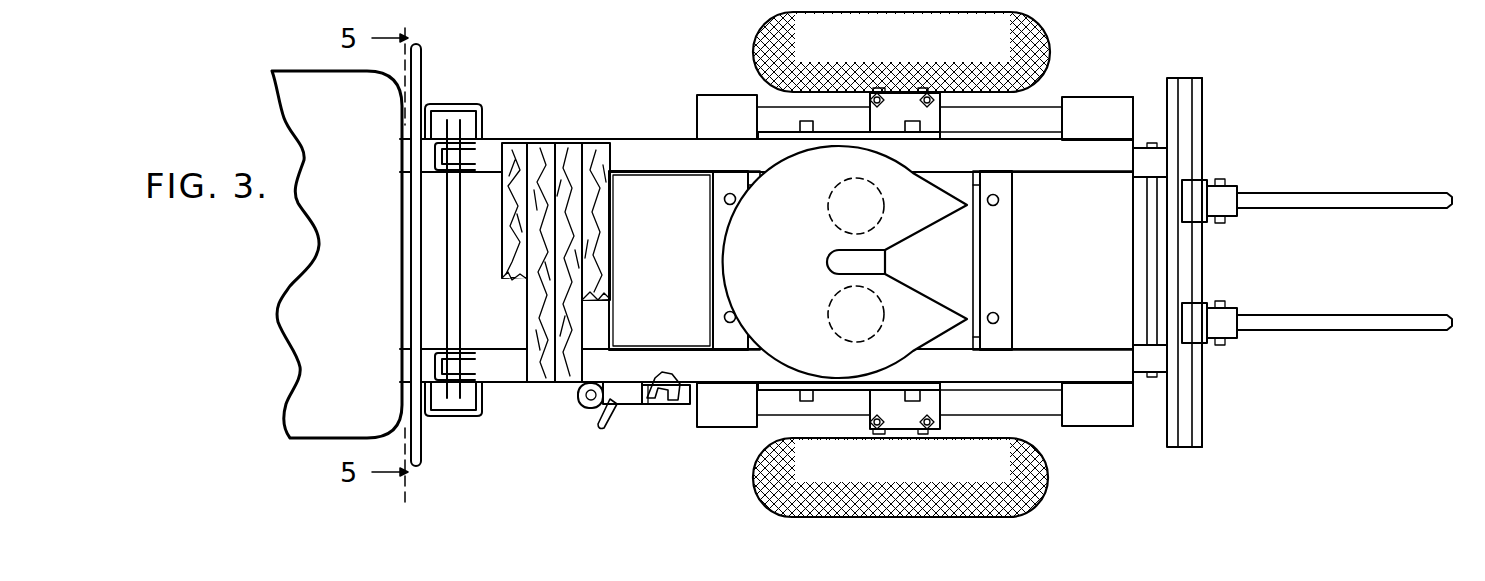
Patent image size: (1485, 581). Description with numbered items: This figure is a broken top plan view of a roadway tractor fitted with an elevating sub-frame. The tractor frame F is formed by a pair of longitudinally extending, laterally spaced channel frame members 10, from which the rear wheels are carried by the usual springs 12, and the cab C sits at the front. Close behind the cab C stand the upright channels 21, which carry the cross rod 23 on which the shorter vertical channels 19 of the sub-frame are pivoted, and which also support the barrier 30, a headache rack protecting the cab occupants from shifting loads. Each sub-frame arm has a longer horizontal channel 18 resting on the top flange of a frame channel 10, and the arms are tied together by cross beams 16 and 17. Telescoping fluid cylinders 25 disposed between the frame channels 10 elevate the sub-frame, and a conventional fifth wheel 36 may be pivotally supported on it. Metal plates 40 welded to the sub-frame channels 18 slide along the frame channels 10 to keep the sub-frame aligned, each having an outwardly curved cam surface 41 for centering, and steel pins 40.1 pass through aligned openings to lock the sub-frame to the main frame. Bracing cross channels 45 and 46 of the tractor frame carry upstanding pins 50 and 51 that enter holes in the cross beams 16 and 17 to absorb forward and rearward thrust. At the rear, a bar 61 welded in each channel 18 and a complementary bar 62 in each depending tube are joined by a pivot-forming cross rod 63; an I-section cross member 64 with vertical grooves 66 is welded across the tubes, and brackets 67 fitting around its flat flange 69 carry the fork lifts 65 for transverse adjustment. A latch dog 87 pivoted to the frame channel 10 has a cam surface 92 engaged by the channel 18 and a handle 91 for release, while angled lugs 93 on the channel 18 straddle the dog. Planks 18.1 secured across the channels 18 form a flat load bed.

The frame member 10 is at (766, 265).
The spring 12 is at (1040, 113).
The cross beam 16 is at (718, 245).
The cross beam 17 is at (1000, 248).
The horizontal channel 18 is at (628, 153).
The planks 18.1 is at (590, 143).
The vertical channel 19 is at (468, 166).
The upright channel 21 is at (480, 102).
The cross rod 23 is at (459, 290).
The fluid cylinder 25 is at (826, 205).
The barrier 30 is at (427, 75).
The fifth wheel 36 is at (747, 218).
The metal plate 40 is at (845, 261).
The steel pin 40.1 is at (808, 120).
The cam surface 41 is at (780, 128).
The bracing cross channel 45 is at (710, 265).
The bracing cross channel 46 is at (968, 260).
The pin 50 is at (724, 199).
The pin 51 is at (999, 200).
The bar 61 is at (1139, 152).
The complementary bar 62 is at (1140, 178).
The cross rod 63 is at (1146, 253).
The cross member 64 is at (1221, 249).
The fork lift 65 is at (1330, 193).
The longitudinal groove 66 is at (1183, 103).
The bracket 67 is at (1193, 198).
The flat flange 69 is at (1204, 137).
The latch dog 87 is at (650, 357).
The handle 91 is at (606, 429).
The cam surface 92 is at (673, 374).
The lug 93 is at (630, 406).
The cab C is at (290, 318).
The frame F is at (554, 392).